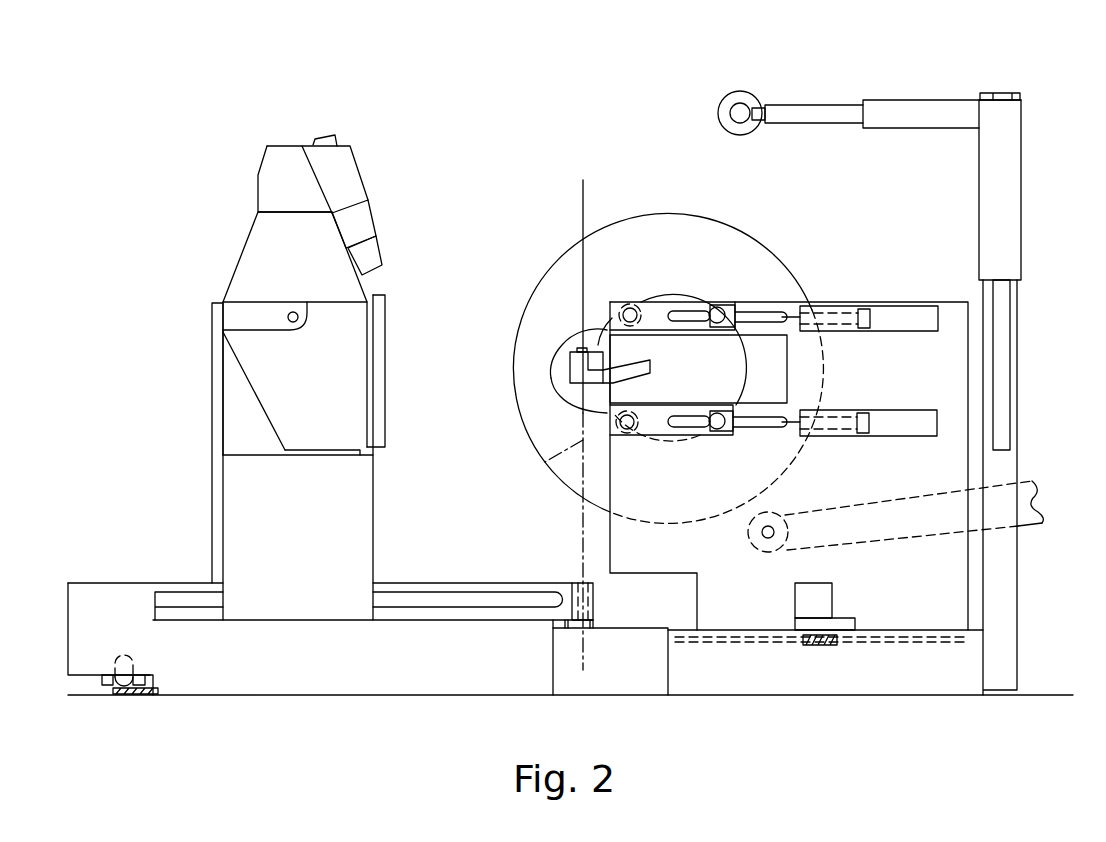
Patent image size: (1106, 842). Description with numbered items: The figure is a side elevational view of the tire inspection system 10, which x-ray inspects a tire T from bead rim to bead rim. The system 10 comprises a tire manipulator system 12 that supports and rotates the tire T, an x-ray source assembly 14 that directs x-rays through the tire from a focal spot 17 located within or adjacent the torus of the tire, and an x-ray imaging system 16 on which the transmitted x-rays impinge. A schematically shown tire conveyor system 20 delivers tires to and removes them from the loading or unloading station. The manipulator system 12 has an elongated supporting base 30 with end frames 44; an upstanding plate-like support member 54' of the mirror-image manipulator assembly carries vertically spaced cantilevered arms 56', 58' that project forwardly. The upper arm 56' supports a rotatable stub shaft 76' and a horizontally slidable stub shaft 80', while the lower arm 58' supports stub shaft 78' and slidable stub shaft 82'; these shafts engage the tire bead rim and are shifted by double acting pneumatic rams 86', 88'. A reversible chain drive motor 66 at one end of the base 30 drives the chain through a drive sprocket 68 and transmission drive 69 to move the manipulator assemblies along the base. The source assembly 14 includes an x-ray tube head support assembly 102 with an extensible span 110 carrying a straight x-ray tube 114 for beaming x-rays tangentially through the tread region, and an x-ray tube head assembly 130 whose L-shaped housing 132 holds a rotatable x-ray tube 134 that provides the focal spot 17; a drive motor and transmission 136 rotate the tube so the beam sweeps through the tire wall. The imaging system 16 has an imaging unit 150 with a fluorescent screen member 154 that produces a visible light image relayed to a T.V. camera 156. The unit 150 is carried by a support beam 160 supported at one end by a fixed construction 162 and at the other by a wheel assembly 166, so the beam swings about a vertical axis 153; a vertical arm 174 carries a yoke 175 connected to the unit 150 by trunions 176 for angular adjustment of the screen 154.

The tire inspection system 10 is at (918, 70).
The tire manipulator system 12 is at (607, 528).
The x-ray source assembly 14 is at (1016, 82).
The x-ray imaging system 16 is at (238, 249).
The focal spot 17 is at (583, 322).
The tire conveyor system 20 is at (1037, 523).
The supporting base 30 is at (873, 679).
The end frame 44 is at (800, 696).
The support member 54' is at (741, 388).
The cantilevered arm 56' is at (782, 279).
The cantilevered arm 58' is at (789, 433).
The reversible chain drive motor 66 is at (830, 600).
The drive sprocket 68 is at (812, 645).
The transmission drive 69 is at (840, 625).
The rotatable stub shaft 76' is at (633, 283).
The rotatable stub shaft 78' is at (641, 443).
The rotatable stub shaft 80' is at (712, 283).
The rotatable stub shaft 82' is at (733, 443).
The ram 86' is at (869, 289).
The ram 88' is at (868, 398).
The x-ray tube head support assembly 102 is at (1020, 178).
The extensible span 110 is at (805, 104).
The straight x-ray tube 114 is at (732, 93).
The x-ray tube head assembly 130 is at (588, 363).
The x-ray tube housing 132 is at (577, 388).
The x-ray tube 134 is at (570, 352).
The drive motor and transmission 136 is at (625, 363).
The imaging unit 150 is at (253, 333).
The axis 153 is at (548, 460).
The fluorescent screen member 154 is at (385, 405).
The T.V. camera 156 is at (372, 222).
The support beam 160 is at (425, 612).
The fixed construction 162 is at (577, 580).
The wheel assembly 166 is at (132, 682).
The vertical arm 174 is at (212, 403).
The yoke 175 is at (240, 315).
The trunions 176 is at (292, 323).
The tire T is at (760, 242).